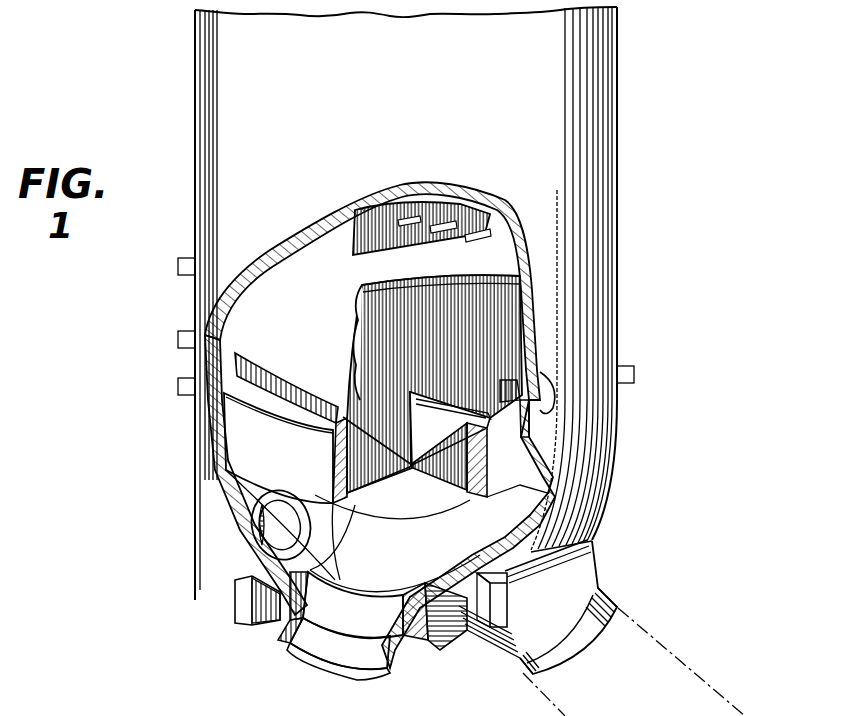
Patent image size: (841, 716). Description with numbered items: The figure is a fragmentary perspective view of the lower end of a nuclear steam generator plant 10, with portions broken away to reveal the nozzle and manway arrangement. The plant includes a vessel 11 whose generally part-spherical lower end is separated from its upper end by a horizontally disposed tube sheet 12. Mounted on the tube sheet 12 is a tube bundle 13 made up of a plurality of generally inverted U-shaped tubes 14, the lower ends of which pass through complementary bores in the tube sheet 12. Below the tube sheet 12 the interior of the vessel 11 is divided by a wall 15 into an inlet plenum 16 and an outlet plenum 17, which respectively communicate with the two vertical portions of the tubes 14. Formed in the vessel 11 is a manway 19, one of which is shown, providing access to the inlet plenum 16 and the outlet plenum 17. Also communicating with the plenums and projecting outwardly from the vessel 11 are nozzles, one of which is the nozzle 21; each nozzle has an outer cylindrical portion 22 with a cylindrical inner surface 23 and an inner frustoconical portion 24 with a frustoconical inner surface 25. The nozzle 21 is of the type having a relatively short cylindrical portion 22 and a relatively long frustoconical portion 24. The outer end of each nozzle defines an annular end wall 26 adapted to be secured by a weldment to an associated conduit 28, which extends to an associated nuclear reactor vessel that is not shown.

The nuclear steam generator plant 10 is at (686, 58).
The vessel 11 is at (618, 206).
The tube sheet 12 is at (258, 440).
The tube bundle 13 is at (380, 304).
The tubes 14 is at (380, 345).
The wall 15 is at (515, 519).
The inlet plenum 16 is at (443, 562).
The outlet plenum 17 is at (521, 498).
The manway 19 is at (278, 522).
The nozzle 21 is at (608, 572).
The outer cylindrical portion 22 is at (398, 668).
The cylindrical inner surface 23 is at (364, 667).
The inner frustoconical portion 24 is at (415, 616).
The frustoconical inner surface 25 is at (369, 622).
The annular end wall 26 is at (308, 663).
The conduit 28 is at (292, 647).